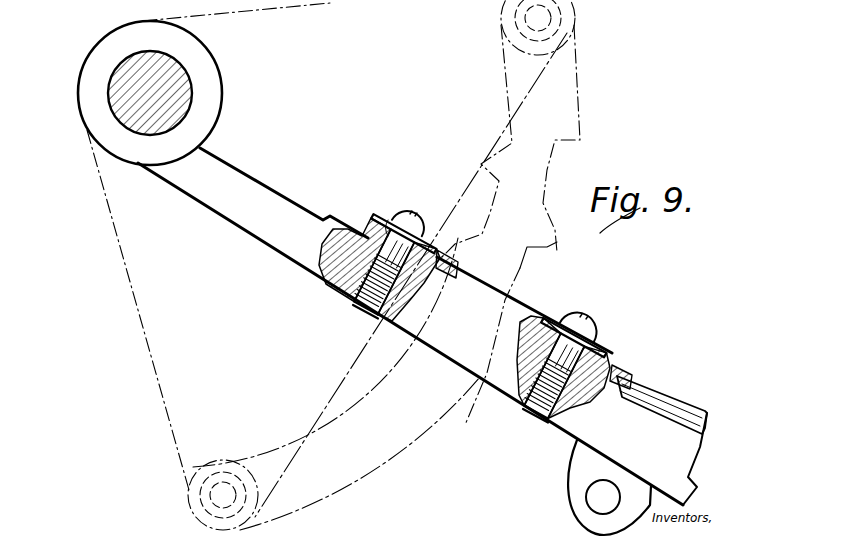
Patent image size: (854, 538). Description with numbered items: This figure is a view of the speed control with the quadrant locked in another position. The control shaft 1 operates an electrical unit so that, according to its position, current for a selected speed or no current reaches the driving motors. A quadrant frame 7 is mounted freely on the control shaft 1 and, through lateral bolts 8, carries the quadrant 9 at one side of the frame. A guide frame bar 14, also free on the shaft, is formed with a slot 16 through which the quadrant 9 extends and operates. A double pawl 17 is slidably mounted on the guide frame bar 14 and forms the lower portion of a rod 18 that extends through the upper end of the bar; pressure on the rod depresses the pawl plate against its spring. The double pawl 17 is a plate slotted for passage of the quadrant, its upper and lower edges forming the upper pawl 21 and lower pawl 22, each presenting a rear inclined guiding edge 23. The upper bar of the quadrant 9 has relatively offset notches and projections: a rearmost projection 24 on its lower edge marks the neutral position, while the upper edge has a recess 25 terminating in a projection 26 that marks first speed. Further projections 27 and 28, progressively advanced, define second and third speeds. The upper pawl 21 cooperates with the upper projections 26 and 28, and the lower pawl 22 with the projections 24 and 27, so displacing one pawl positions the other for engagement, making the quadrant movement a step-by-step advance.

The control shaft 1 is at (118, 72).
The quadrant frame 7 is at (152, 377).
The lateral bolts 8 is at (188, 514).
The quadrant 9 is at (340, 484).
The guide frame bar 14 is at (273, 197).
The slot 16 is at (510, 398).
The double pawl 17 is at (378, 213).
The rod 18 is at (673, 396).
The upper pawl 21 is at (547, 317).
The lower pawl 22 is at (440, 267).
The inclined guiding edge 23 is at (452, 300).
The rearmost projection 24 is at (446, 250).
The recess 25 is at (515, 257).
The projection 26 is at (556, 248).
The projection 27 is at (483, 163).
The projection 28 is at (580, 134).